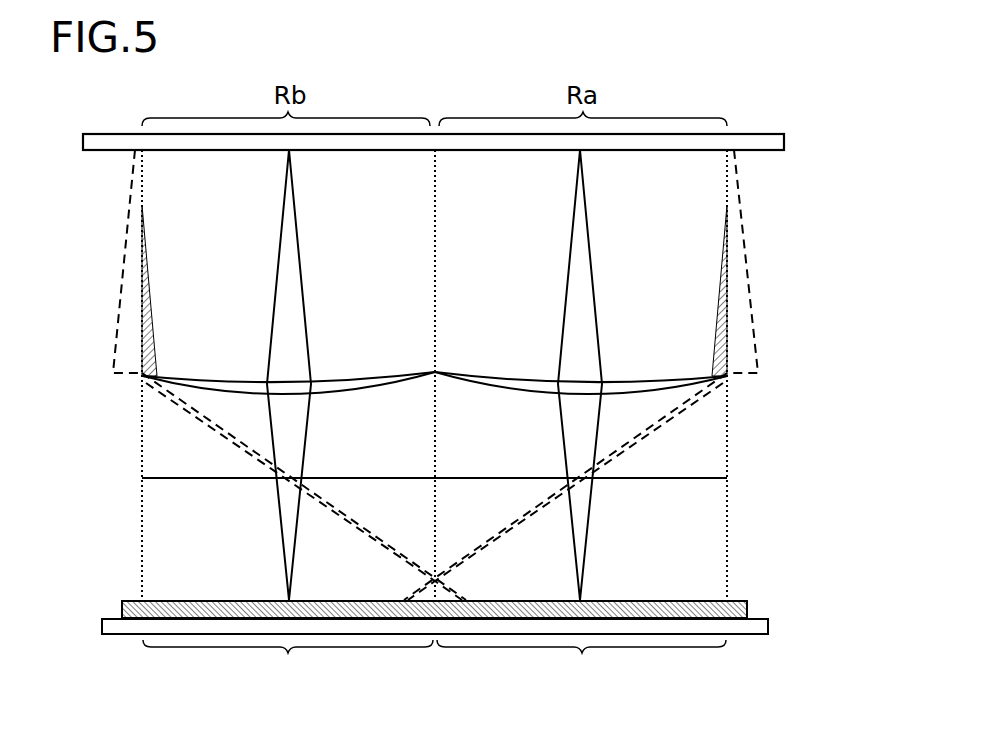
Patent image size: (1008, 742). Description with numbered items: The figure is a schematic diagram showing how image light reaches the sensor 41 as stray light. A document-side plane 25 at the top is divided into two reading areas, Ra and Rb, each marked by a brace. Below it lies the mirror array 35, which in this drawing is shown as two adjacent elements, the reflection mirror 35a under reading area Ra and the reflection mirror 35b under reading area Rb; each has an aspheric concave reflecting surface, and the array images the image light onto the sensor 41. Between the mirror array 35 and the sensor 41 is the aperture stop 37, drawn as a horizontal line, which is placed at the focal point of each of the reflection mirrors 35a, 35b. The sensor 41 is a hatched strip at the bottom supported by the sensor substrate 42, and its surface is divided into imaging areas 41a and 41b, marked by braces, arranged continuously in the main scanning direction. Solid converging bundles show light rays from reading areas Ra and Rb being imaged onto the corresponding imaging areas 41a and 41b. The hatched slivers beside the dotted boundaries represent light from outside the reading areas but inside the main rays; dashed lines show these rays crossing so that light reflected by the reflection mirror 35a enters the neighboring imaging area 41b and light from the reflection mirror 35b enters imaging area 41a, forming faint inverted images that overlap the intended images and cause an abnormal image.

The display panel 25 is at (763, 134).
The mirror array 35 is at (490, 352).
The reflection mirror 35a is at (478, 377).
The reflection mirror 35b is at (393, 377).
The aperture stop 37 is at (273, 480).
The sensor 41 is at (735, 600).
The imaging area 41a is at (581, 666).
The imaging area 41b is at (288, 666).
The sensor substrate 42 is at (770, 623).